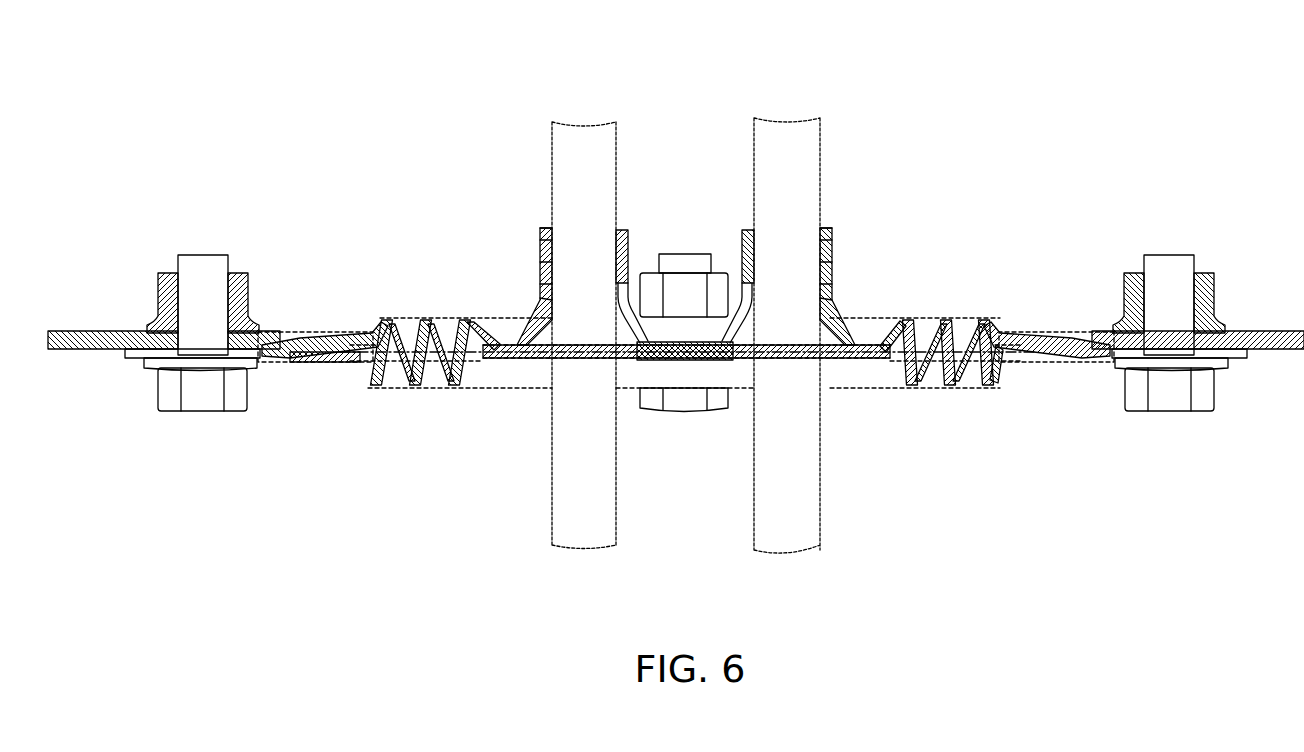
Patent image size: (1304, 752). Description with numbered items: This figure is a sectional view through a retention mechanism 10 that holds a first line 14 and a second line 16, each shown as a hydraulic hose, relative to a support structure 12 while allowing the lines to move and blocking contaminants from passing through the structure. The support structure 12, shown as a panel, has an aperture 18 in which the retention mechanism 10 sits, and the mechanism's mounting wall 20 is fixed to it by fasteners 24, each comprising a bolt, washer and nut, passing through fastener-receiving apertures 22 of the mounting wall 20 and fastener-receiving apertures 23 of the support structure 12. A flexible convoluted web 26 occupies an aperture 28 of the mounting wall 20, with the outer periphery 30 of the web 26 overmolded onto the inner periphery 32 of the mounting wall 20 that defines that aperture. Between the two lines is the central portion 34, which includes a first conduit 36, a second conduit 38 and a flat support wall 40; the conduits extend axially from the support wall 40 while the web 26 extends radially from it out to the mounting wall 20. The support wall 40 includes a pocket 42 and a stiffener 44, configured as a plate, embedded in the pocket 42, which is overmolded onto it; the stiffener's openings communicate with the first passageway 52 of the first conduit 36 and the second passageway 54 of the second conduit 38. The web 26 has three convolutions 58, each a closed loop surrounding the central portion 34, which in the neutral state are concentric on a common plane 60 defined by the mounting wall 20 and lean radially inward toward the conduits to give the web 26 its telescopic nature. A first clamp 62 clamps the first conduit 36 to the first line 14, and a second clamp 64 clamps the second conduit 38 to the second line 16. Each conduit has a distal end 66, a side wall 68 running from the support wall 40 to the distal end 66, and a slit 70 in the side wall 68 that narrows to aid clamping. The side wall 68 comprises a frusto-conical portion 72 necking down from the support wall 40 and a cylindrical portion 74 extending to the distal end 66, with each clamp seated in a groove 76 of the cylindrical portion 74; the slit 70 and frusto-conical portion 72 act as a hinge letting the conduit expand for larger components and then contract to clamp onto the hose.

The retention mechanism 10 is at (370, 160).
The support structure 12 is at (88, 331).
The first line 14 is at (583, 152).
The second line 16 is at (785, 167).
The aperture 18 is at (290, 332).
The mounting wall 20 is at (286, 365).
The fastener-receiving apertures 22 is at (220, 352).
The fastener-receiving apertures 23 is at (218, 360).
The fasteners 24 is at (158, 392).
The flexible convoluted web 26 is at (963, 402).
The aperture 28 is at (342, 365).
The outer periphery 30 is at (322, 342).
The inner periphery 32 is at (306, 365).
The central portion 34 is at (685, 372).
The first conduit 36 is at (528, 298).
The second conduit 38 is at (844, 298).
The support wall 40 is at (870, 335).
The pocket 42 is at (500, 365).
The stiffener 44 is at (866, 365).
The first passageway 52 is at (552, 300).
The second passageway 54 is at (820, 300).
The convolutions 58 is at (460, 320).
The common plane 60 is at (440, 388).
The first clamp 62 is at (545, 250).
The second clamp 64 is at (827, 250).
The distal end 66 is at (548, 228).
The side wall 68 is at (546, 235).
The slit 70 is at (633, 280).
The frusto-conical portion 72 is at (530, 325).
The cylindrical portion 74 is at (542, 285).
The groove 76 is at (544, 265).